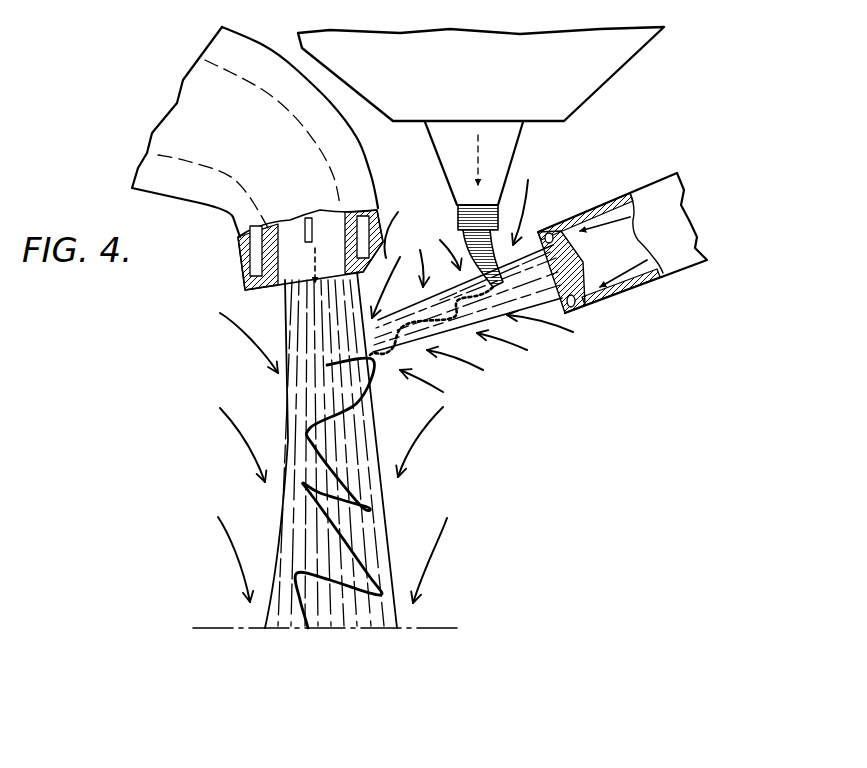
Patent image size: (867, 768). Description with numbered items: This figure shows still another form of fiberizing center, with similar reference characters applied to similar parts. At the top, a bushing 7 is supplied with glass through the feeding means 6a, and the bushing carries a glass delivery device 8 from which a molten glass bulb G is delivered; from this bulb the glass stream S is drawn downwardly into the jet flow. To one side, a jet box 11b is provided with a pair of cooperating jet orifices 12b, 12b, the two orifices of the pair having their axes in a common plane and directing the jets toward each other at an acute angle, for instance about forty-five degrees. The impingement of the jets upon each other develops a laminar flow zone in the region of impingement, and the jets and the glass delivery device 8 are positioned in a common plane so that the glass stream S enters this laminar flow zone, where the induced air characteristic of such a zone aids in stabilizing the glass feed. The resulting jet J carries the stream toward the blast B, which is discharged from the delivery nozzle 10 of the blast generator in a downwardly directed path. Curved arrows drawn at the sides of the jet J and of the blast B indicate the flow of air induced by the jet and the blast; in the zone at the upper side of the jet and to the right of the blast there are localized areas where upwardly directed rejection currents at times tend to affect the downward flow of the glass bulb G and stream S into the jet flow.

The delivery nozzle 10 is at (177, 103).
The feeding means 6a is at (615, 68).
The bushing 7 is at (510, 147).
The glass delivery device 8 is at (450, 212).
The molten glass bulb G is at (457, 248).
The jet box 11b is at (630, 283).
The jet orifice 12b is at (550, 233).
The jet J is at (470, 330).
The blast B is at (290, 388).
The glass stream S is at (367, 505).